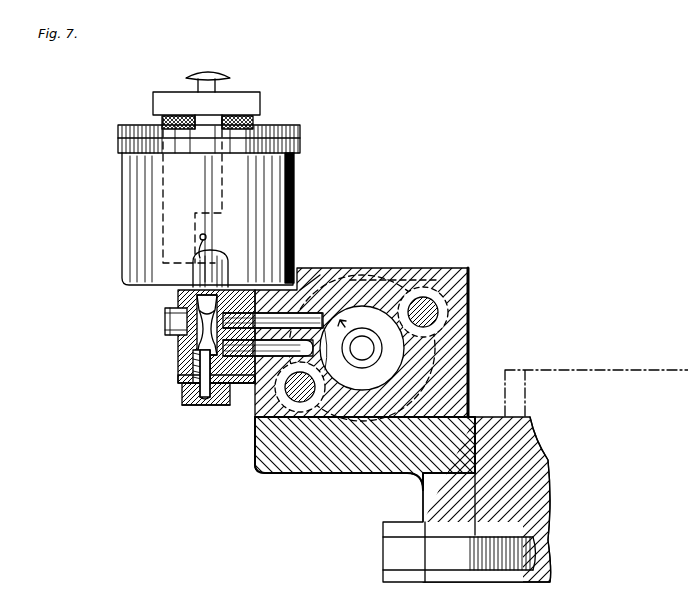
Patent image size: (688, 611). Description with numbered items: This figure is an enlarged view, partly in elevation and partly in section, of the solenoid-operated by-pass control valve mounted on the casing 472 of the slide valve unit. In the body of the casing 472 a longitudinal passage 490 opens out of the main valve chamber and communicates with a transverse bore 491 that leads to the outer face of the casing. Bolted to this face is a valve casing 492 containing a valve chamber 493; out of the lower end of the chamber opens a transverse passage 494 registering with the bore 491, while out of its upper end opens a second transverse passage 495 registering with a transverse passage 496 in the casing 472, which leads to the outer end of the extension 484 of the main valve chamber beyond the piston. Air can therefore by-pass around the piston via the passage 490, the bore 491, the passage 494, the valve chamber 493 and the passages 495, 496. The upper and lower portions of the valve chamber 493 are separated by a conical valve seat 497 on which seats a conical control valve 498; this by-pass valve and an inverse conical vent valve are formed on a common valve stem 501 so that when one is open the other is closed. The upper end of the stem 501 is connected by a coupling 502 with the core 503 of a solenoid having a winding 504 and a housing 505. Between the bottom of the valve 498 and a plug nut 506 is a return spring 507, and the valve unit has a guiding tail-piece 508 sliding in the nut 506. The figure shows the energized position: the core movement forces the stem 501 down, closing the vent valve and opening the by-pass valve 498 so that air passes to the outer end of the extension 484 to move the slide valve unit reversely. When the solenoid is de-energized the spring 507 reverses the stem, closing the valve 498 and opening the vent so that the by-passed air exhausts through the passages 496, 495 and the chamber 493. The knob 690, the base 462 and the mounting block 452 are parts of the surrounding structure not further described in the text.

The knob 690 is at (216, 78).
The winding 504 is at (162, 120).
The core 503 is at (208, 119).
The housing 505 is at (294, 175).
The coupling 502 is at (200, 237).
The second transverse passage 495 is at (292, 258).
The transverse passage 496 is at (300, 315).
The casing 472 is at (470, 283).
The extension 484 is at (395, 355).
The longitudinal passage 490 is at (340, 320).
The common valve stem 501 is at (165, 316).
The valve chamber 493 is at (183, 333).
The conical valve seat 497 is at (190, 360).
The conical control valve 498 is at (180, 380).
The return spring 507 is at (185, 400).
The guiding tail-piece 508 is at (182, 410).
The plug nut 506 is at (198, 400).
The transverse passage 494 is at (240, 352).
The valve casing 492 is at (248, 385).
The transverse bore 491 is at (272, 420).
The base 462 is at (405, 462).
The mounting block 452 is at (546, 498).